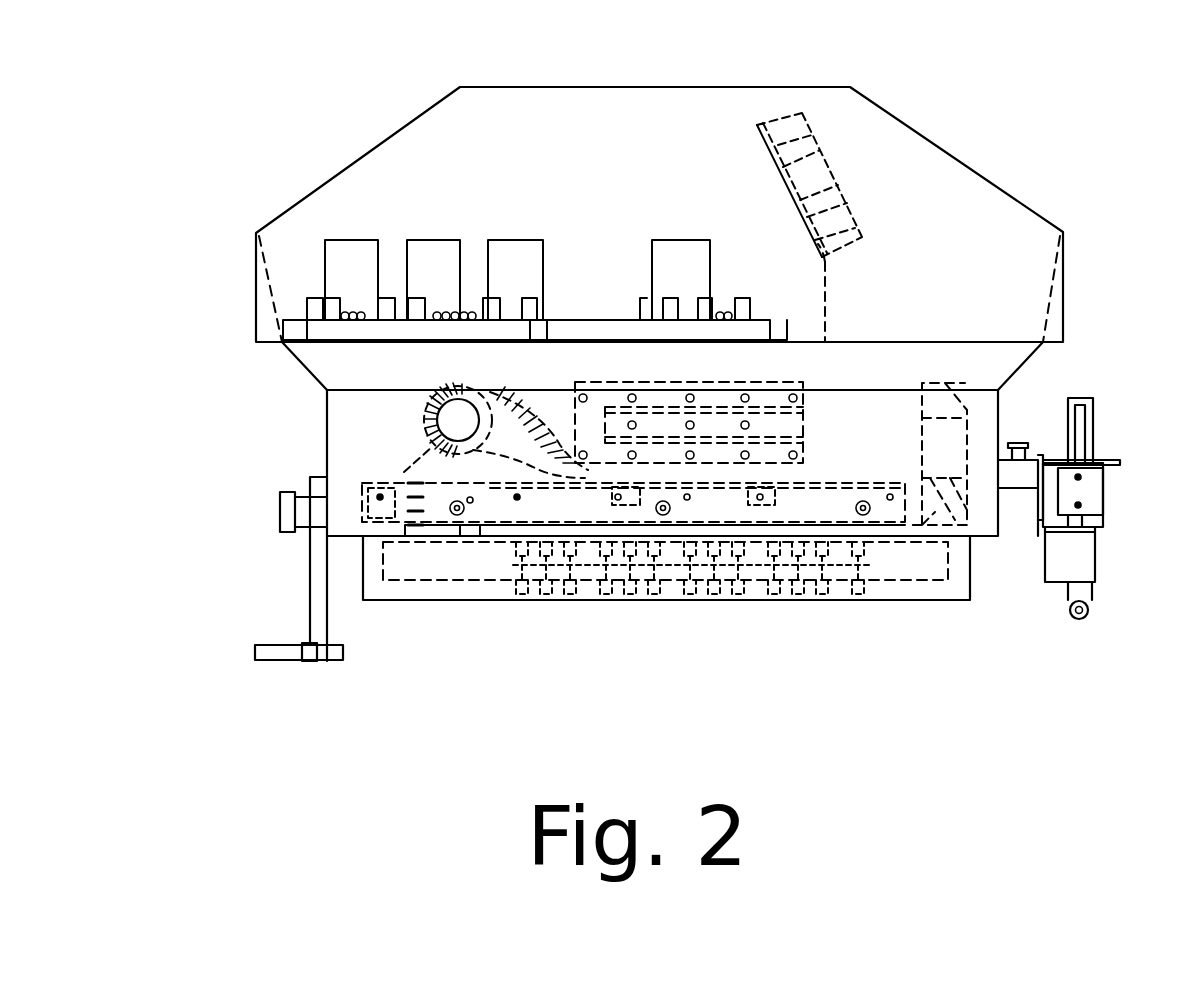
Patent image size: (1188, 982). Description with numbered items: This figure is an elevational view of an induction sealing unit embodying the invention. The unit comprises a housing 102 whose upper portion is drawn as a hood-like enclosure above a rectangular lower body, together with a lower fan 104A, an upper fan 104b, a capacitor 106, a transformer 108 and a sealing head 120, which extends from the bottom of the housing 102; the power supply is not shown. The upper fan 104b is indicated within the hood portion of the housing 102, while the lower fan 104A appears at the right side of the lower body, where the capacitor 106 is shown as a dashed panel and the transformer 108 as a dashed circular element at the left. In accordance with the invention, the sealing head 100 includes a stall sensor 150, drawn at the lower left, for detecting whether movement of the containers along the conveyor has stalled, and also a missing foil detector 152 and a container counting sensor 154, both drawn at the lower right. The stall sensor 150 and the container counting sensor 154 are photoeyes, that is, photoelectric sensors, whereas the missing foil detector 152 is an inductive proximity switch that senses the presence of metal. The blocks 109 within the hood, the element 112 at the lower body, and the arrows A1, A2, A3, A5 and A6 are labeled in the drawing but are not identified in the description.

The sealing head 100 is at (345, 120).
The housing 102 is at (1067, 253).
The lower fan 104A is at (945, 458).
The upper fan 104b is at (810, 183).
The capacitor 106 is at (765, 425).
The transformer 108 is at (426, 414).
The component blocks 109 is at (473, 250).
The main housing 112 is at (985, 564).
The sealing head 120 is at (848, 600).
The stall sensor 150 is at (256, 649).
The missing foil detector 152 is at (1094, 556).
The container counting sensor 154 is at (1090, 614).
The direction arrow A1 is at (982, 477).
The direction arrow A2 is at (828, 437).
The direction arrow A3 is at (345, 537).
The direction arrow A5 is at (730, 193).
The direction arrow A6 is at (268, 346).